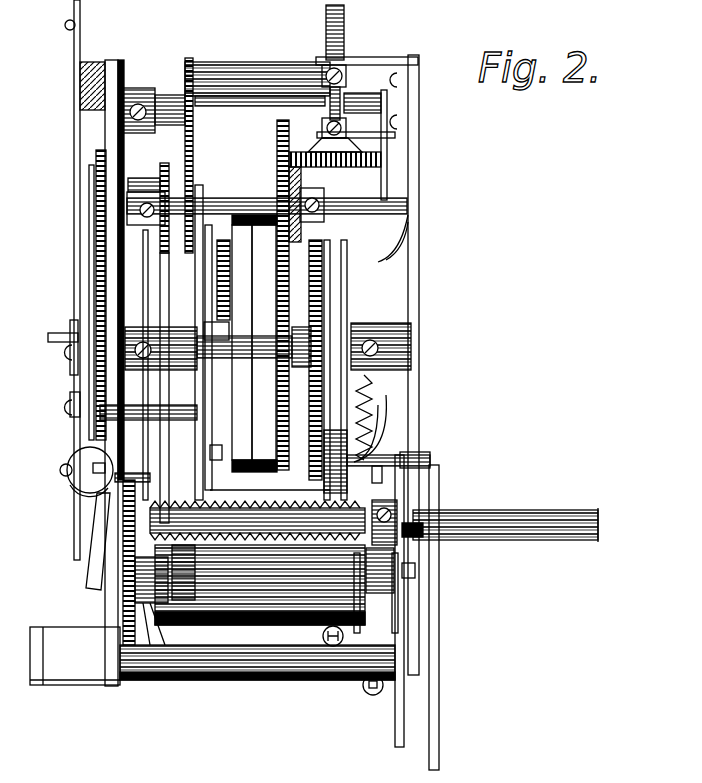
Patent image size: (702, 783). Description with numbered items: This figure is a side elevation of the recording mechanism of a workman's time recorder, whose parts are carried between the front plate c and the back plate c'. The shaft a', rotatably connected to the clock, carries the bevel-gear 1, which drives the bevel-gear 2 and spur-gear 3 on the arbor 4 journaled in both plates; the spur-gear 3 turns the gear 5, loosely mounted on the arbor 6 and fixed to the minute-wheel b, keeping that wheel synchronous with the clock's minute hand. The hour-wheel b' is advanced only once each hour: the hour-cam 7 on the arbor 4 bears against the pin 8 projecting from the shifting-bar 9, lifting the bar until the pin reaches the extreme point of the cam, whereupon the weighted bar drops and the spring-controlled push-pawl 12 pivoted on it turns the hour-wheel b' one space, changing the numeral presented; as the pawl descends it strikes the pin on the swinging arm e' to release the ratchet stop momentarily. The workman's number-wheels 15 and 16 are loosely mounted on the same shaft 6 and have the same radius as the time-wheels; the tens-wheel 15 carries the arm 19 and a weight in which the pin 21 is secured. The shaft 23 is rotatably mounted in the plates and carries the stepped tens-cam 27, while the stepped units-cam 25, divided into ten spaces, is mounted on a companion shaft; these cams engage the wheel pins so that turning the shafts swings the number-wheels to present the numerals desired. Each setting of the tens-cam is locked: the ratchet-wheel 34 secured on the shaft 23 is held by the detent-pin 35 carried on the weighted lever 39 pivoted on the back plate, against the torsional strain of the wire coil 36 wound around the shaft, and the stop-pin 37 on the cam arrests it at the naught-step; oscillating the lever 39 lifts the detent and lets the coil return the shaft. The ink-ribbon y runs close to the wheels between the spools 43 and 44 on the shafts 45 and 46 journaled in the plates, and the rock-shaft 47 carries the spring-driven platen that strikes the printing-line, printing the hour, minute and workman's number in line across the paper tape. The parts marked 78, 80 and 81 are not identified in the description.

The bevel-gear 1 is at (335, 190).
The bevel-gear 2 is at (312, 195).
The spur-gear 3 is at (260, 108).
The arbor 4 is at (255, 172).
The gear 5 is at (301, 327).
The arbor 6 is at (269, 371).
The hour-cam 7 is at (166, 332).
The pin 8 is at (146, 189).
The shifting-bar 9 is at (206, 329).
The spring-controlled push-pawl 12 is at (216, 391).
The tens number-wheel 15 is at (312, 352).
The number-printing wheel 16 is at (335, 361).
The arm 19 is at (324, 462).
The pin 21 is at (430, 457).
The shaft 23 is at (500, 515).
The units-cam 25 is at (448, 617).
The tens-cam 27 is at (420, 612).
The ratchet-wheel 34 is at (74, 541).
The detent-pin 35 is at (132, 468).
The wire coil 36 is at (273, 518).
The stop-pin 37 is at (440, 565).
The weighted lever 39 is at (92, 497).
The spool 43 is at (257, 70).
The spool 44 is at (262, 583).
The shaft 45 is at (154, 103).
The shaft 46 is at (376, 590).
The rock-shaft 47 is at (257, 672).
The bracket 78 is at (76, 312).
The rack 80 is at (96, 185).
The bracket 81 is at (100, 385).
The shaft a' is at (367, 102).
The minute-wheel b is at (260, 296).
The hour-wheel b' is at (228, 236).
The front plate c is at (405, 365).
The back plate c' is at (96, 343).
The swinging arm e' is at (269, 491).
The ink-ribbon y is at (235, 112).